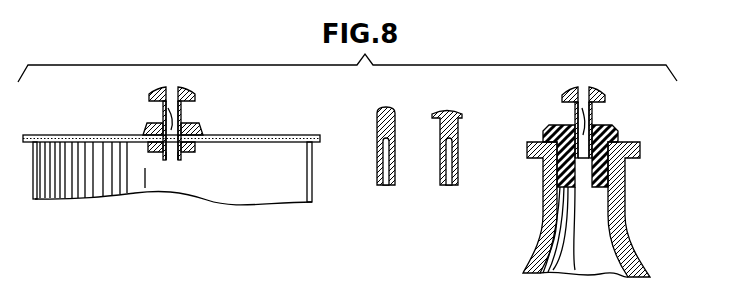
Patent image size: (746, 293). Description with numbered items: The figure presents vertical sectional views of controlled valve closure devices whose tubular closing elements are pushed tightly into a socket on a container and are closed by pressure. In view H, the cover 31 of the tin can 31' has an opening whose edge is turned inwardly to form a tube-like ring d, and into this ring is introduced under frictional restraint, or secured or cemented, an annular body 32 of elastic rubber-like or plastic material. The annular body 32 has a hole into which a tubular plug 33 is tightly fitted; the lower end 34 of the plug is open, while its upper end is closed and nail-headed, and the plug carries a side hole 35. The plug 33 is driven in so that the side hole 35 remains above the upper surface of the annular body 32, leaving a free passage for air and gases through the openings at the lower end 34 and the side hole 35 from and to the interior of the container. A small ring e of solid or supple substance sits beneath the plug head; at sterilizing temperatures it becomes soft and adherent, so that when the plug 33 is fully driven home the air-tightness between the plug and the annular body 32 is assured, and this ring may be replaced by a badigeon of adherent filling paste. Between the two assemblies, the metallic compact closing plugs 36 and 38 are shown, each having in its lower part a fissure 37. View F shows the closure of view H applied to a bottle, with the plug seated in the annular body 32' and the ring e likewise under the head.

The cover 31 is at (171, 152).
The tin can 31' is at (325, 172).
The annular body 32 is at (199, 129).
The annular body 32' is at (606, 156).
The tubular plug 33 is at (163, 118).
The lower end 34 is at (175, 162).
The side hole 35 is at (183, 118).
The metallic compact closing plug 36 is at (380, 115).
The fissure 37 is at (386, 187).
The metallic compact closing plug 38 is at (458, 130).
The view of closure on tin can H is at (176, 207).
The view of closure on bottle F is at (663, 235).
The small ring e is at (148, 97).
The tube-like ring d is at (190, 144).